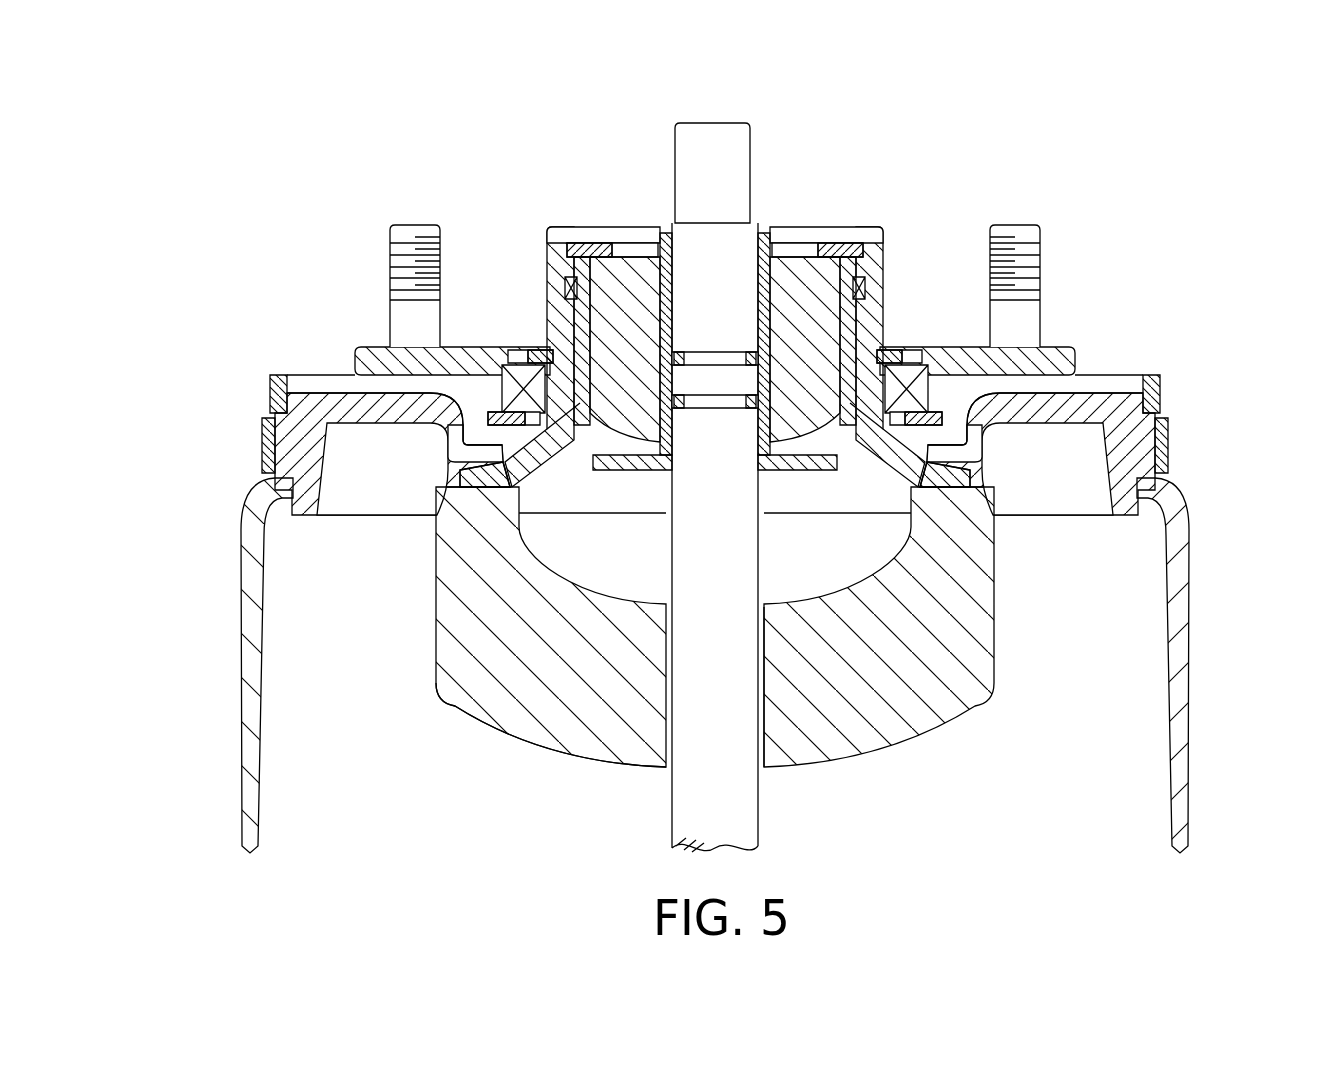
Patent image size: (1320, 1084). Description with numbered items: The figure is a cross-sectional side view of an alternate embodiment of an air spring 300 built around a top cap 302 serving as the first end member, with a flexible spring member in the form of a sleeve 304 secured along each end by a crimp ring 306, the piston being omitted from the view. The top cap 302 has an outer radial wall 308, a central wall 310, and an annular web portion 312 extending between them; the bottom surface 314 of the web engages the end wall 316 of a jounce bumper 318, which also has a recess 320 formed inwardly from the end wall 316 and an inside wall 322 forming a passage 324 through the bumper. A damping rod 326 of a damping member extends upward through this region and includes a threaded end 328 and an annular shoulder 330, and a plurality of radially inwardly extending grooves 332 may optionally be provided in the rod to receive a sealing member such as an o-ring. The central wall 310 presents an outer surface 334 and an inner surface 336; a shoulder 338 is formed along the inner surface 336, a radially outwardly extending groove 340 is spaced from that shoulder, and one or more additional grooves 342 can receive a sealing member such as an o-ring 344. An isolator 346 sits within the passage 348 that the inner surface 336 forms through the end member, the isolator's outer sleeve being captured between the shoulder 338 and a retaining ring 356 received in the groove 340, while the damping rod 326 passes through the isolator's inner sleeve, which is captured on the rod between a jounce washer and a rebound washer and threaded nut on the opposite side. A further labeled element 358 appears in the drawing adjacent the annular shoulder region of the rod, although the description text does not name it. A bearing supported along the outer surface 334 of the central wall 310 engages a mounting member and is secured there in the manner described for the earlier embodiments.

The air spring 300 is at (268, 232).
The top cap 302 is at (272, 368).
The sleeve 304 is at (238, 646).
The crimp ring 306 is at (1170, 441).
The outer radial wall 308 is at (316, 492).
The central wall 310 is at (708, 355).
The annular web portion 312 is at (1055, 412).
The bottom surface 314 is at (432, 468).
The end wall 316 is at (965, 489).
The jounce bumper 318 is at (916, 654).
The recess 320 is at (627, 567).
The inside wall 322 is at (916, 654).
The passage 324 is at (551, 672).
The damping rod 326 is at (748, 816).
The threaded end 328 is at (708, 140).
The annular shoulder 330 is at (752, 463).
The grooves 332 is at (743, 400).
The outer surface 334 is at (556, 322).
The inner surface 336 is at (860, 342).
The shoulder 338 is at (566, 436).
The groove 340 is at (563, 240).
The additional grooves 342 is at (862, 290).
The o-ring 344 is at (562, 282).
The isolator 346 is at (787, 283).
The passage 348 is at (820, 230).
The retaining ring 356 is at (594, 252).
The flange 358 is at (797, 468).